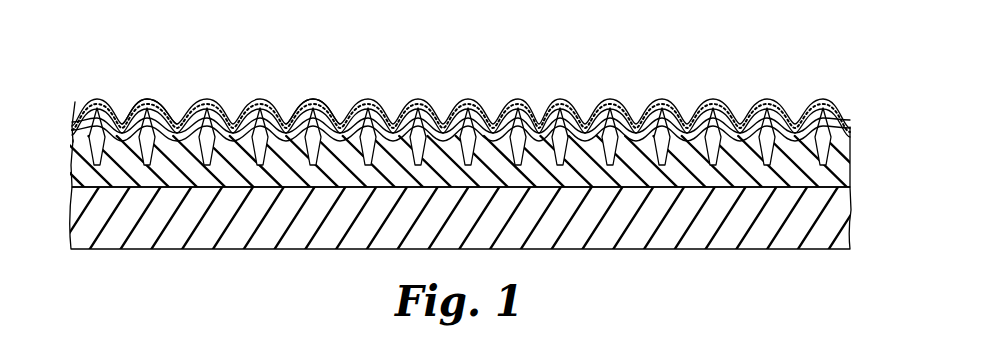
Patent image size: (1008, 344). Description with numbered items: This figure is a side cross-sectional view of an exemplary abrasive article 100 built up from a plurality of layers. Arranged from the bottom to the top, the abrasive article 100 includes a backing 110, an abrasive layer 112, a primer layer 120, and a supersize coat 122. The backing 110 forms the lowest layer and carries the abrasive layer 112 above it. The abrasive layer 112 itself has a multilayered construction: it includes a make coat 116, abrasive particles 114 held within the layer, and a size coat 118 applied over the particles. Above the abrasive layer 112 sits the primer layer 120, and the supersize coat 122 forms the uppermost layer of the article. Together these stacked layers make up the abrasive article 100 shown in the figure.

The abrasive article 100 is at (805, 50).
The backing 110 is at (841, 208).
The abrasive layer 112 is at (856, 186).
The abrasive particles 114 is at (548, 118).
The make coat 116 is at (73, 168).
The size coat 118 is at (72, 146).
The primer layer 120 is at (152, 101).
The supersize coat 122 is at (304, 104).